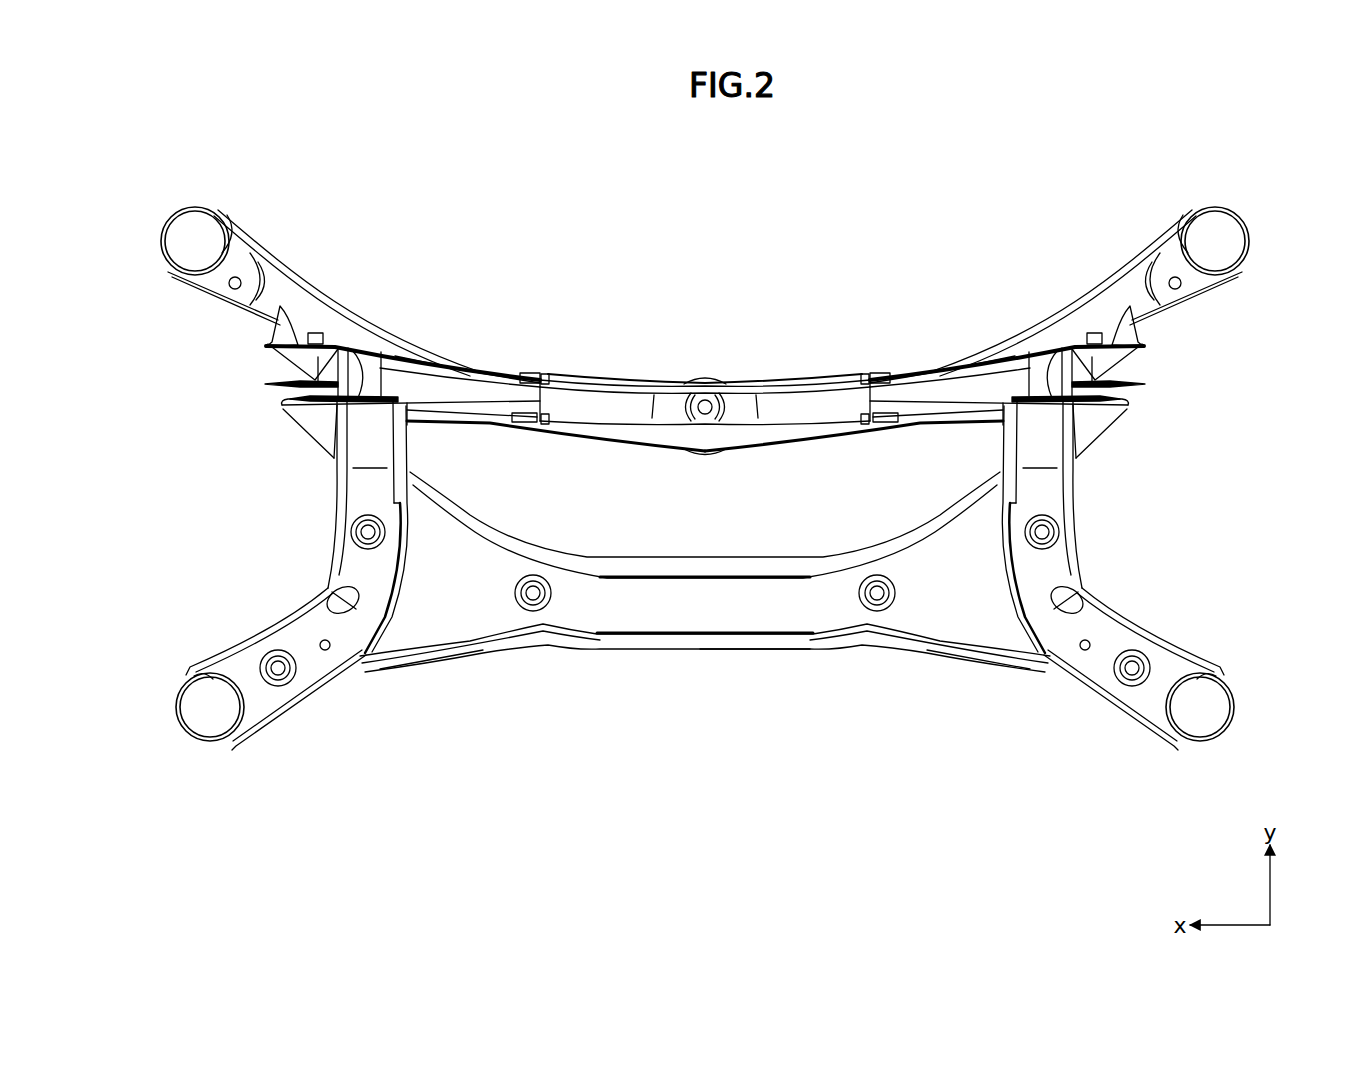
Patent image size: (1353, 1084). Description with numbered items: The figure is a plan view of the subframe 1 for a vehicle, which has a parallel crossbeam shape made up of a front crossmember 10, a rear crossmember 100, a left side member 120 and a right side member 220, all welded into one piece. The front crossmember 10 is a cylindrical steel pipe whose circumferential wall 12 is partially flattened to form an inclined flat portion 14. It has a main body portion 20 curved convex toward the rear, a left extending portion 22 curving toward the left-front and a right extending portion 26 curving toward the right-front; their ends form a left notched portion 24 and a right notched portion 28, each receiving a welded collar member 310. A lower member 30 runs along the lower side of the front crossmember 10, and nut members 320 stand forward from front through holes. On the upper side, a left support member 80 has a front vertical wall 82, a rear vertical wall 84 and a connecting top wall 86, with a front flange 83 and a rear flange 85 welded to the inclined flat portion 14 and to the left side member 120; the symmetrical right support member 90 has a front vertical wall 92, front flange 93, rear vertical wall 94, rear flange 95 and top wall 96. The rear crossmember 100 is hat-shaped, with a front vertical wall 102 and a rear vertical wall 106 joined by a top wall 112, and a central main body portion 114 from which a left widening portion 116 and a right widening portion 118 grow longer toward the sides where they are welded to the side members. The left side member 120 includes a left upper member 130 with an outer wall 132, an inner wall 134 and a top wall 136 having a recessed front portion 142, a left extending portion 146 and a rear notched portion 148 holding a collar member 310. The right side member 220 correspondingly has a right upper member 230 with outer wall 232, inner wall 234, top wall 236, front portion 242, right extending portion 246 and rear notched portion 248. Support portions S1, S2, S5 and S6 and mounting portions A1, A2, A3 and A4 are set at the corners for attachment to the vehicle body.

The subframe 1 is at (950, 140).
The front crossmember 10 is at (812, 325).
The circumferential wall 12 is at (604, 396).
The inclined flat portion 14 is at (552, 378).
The main body portion 20 is at (744, 358).
The left extending portion 22 is at (297, 254).
The left notched portion 24 is at (226, 232).
The right extending portion 26 is at (1087, 276).
The right notched portion 28 is at (1180, 246).
The lower member 30 is at (1112, 366).
The left support member 80 is at (431, 336).
The front vertical wall 82 is at (478, 372).
The front flange 83 is at (528, 378).
The rear vertical wall 84 is at (516, 420).
The rear flange 85 is at (546, 445).
The top wall 86 is at (404, 376).
The right support member 90 is at (986, 342).
The front vertical wall 92 is at (941, 372).
The front flange 93 is at (884, 380).
The rear vertical wall 94 is at (893, 420).
The rear flange 95 is at (862, 445).
The top wall 96 is at (1010, 376).
The rear crossmember 100 is at (573, 663).
The front vertical wall 102 is at (702, 578).
The rear vertical wall 106 is at (597, 636).
The top wall 112 is at (700, 612).
The main body portion 114 is at (744, 683).
The left widening portion 116 is at (438, 678).
The right widening portion 118 is at (946, 672).
The left side member 120 is at (228, 531).
The left upper member 130 is at (332, 490).
The outer wall 132 is at (344, 512).
The inner wall 134 is at (404, 442).
The top wall 136 is at (356, 570).
The front portion 142 is at (336, 437).
The left extending portion 146 is at (263, 622).
The rear notched portion 148 is at (202, 680).
The right side member 220 is at (1116, 510).
The right upper member 230 is at (1082, 490).
The outer wall 232 is at (1066, 512).
The inner wall 234 is at (1006, 442).
The top wall 236 is at (1093, 632).
The front portion 242 is at (1052, 422).
The right extending portion 246 is at (1147, 622).
The rear notched portion 248 is at (1217, 690).
The collar member 310 is at (193, 207).
The nut member 320 is at (316, 333).
The first mounting portion A1 is at (162, 212).
The second mounting portion A2 is at (160, 728).
The third mounting portion A3 is at (1255, 212).
The fourth mounting portion A4 is at (1245, 713).
The first support portion S1 is at (268, 356).
The second support portion S2 is at (1130, 368).
The fifth support portion S5 is at (264, 398).
The sixth support portion S6 is at (1140, 398).